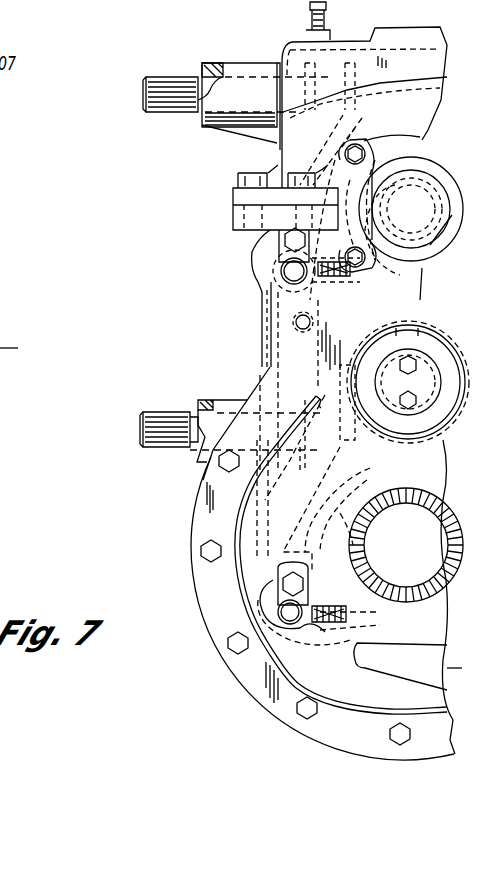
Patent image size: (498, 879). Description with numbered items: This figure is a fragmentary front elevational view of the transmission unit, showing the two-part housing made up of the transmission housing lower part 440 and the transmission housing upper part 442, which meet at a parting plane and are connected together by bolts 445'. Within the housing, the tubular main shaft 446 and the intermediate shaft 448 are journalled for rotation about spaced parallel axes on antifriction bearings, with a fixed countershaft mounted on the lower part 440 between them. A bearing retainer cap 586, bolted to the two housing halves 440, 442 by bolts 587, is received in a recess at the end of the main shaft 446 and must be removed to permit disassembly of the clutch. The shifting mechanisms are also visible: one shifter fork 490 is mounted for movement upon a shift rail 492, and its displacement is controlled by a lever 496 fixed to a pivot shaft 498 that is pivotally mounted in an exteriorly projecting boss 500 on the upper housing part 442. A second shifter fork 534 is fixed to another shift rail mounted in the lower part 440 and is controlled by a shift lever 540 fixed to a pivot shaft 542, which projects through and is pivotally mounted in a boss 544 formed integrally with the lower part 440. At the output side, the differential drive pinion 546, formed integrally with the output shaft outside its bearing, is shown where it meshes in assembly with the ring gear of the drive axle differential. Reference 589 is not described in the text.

The transmission housing lower part 440 is at (262, 335).
The transmission housing upper part 442 is at (430, 82).
The bolts 445' is at (274, 185).
The tubular main shaft 446 is at (448, 194).
The intermediate shaft 448 is at (440, 364).
The shifter fork 490 is at (315, 322).
The shift rail 492 is at (282, 270).
The lever 496 is at (352, 126).
The pivot shaft 498 is at (166, 105).
The exteriorly projecting boss 500 is at (265, 49).
The shifter fork 534 is at (390, 624).
The shift lever 540 is at (346, 479).
The pivot shaft 542 is at (163, 447).
The boss 544 is at (218, 399).
The differential drive pinion 546 is at (450, 528).
The bearing retainer cap 586 is at (415, 147).
The bolts 587 is at (366, 140).
The bolt boss 589 is at (370, 284).